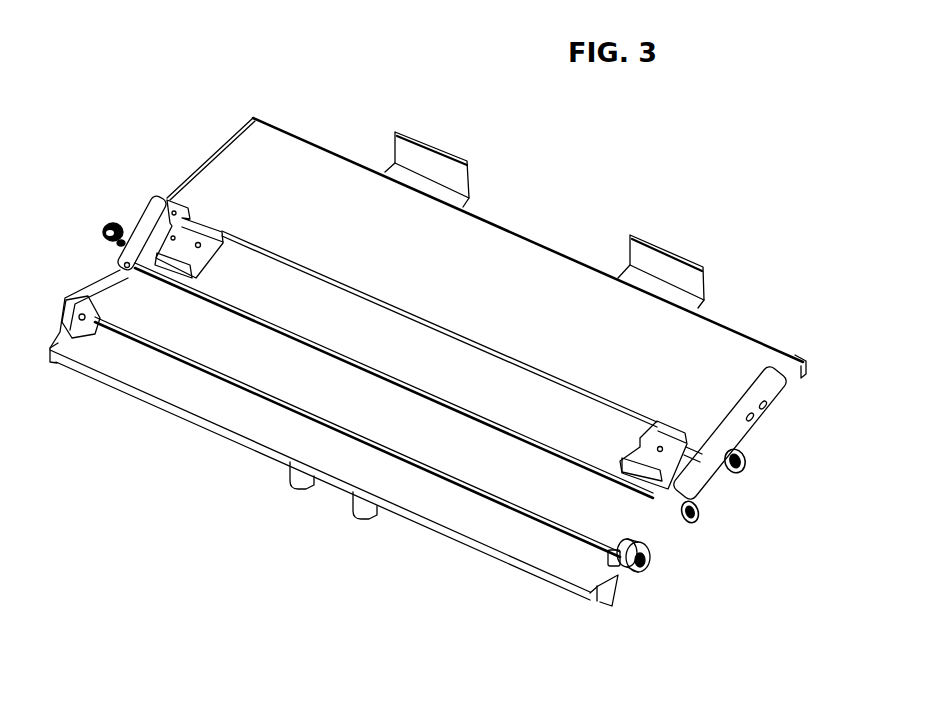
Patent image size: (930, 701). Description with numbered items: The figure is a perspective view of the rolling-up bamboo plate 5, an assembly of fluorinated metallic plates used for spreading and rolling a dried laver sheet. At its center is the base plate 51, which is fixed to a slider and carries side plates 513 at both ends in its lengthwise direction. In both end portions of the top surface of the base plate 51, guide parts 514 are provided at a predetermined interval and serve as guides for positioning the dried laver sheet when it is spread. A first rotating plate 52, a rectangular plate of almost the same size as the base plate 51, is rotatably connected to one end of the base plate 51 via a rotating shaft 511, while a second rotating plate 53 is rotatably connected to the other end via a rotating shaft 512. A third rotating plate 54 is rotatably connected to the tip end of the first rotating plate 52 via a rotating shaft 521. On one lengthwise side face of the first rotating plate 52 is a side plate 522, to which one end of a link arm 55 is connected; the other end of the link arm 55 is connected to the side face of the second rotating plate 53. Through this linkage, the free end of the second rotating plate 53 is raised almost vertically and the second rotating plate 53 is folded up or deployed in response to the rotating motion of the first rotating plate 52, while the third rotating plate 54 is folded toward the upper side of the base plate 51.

The rolling-up bamboo plate 5 is at (559, 181).
The base plate 51 is at (418, 348).
The first rotating plate 52 is at (310, 373).
The second rotating plate 53 is at (325, 185).
The third rotating plate 54 is at (230, 413).
The link arm 55 is at (130, 228).
The rotating shaft 511 is at (696, 519).
The rotating shaft 512 is at (744, 466).
The side plates 513 is at (150, 200).
The guide parts 514 is at (208, 220).
The rotating shaft 521 is at (643, 565).
The side plate 522 is at (83, 263).